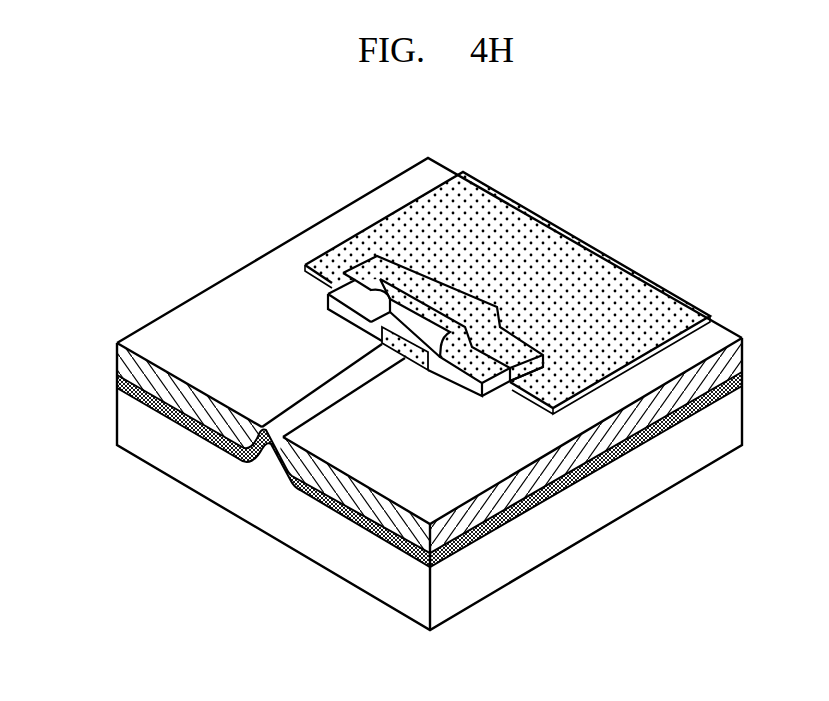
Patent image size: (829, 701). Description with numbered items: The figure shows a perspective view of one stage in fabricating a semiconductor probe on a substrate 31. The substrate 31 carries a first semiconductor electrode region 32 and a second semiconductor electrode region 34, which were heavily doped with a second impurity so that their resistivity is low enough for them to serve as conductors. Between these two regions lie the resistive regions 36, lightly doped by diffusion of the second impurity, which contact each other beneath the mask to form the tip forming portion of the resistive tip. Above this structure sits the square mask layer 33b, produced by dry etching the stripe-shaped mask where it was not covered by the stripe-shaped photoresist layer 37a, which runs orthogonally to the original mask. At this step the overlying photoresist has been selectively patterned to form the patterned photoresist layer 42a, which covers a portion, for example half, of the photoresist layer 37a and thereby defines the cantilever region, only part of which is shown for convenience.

The substrate 31 is at (313, 548).
The first semiconductor electrode region 32 is at (128, 362).
The square mask layer 33b is at (400, 345).
The second semiconductor electrode region 34 is at (377, 522).
The resistive region 36 is at (283, 445).
The photoresist layer 37a is at (395, 316).
The patterned photoresist layer 42a is at (554, 250).